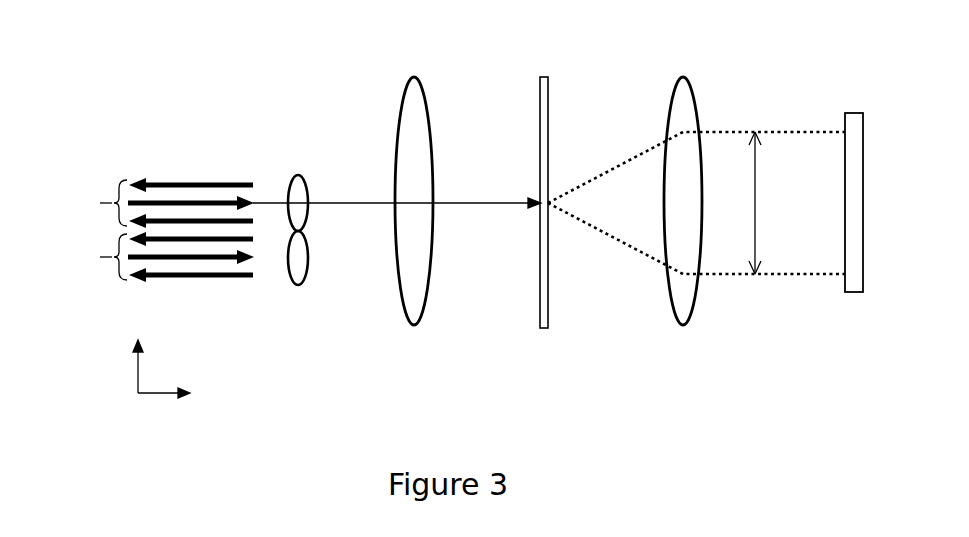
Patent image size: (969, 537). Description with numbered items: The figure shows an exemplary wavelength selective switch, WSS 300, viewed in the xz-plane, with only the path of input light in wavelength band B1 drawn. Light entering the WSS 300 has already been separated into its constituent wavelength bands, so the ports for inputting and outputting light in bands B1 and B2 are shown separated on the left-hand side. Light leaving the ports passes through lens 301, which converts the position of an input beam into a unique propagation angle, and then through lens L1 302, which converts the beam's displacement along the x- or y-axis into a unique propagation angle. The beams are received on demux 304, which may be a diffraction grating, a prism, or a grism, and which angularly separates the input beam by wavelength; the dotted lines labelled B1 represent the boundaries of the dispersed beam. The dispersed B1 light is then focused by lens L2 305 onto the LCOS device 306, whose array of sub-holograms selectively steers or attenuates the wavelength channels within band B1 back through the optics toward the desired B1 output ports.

The WSS 300 is at (128, 97).
The lens 301 is at (299, 174).
The lens L1 302 is at (416, 76).
The demultiplexer 304 is at (546, 77).
The lens L2 305 is at (688, 78).
The LCOS device 306 is at (852, 112).